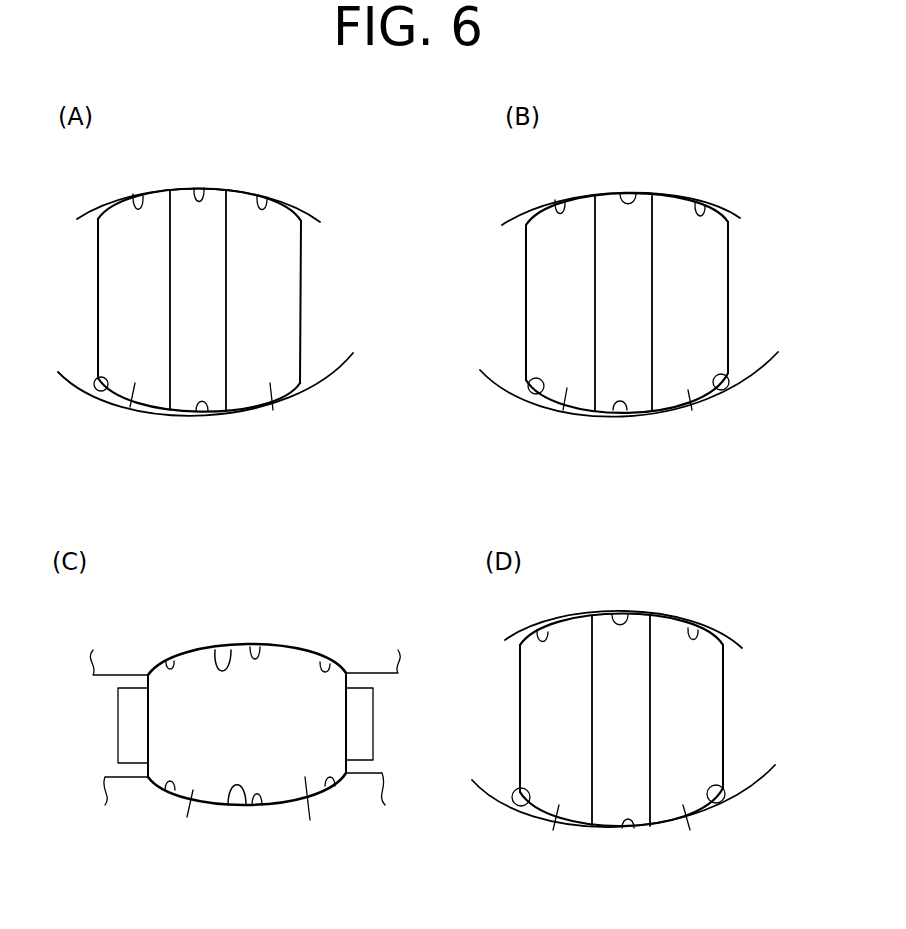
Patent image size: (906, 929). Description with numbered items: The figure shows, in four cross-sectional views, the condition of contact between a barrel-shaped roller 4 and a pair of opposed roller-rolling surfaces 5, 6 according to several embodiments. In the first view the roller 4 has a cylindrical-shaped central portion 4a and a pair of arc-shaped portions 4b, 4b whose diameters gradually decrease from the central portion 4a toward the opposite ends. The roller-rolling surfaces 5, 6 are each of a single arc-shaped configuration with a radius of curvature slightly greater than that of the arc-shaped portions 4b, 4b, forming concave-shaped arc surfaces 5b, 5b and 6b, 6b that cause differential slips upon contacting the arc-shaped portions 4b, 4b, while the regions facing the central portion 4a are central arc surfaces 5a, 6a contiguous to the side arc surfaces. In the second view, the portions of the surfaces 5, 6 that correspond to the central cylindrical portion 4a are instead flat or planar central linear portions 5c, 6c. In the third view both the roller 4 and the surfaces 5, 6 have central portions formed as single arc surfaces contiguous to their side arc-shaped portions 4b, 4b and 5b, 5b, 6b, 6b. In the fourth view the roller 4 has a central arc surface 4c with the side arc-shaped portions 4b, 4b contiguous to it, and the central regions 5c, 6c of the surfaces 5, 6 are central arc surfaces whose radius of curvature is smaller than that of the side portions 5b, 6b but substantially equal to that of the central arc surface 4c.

The roller 4 is at (96, 251).
The central cylindrical portion 4a is at (188, 403).
The arc-shaped portions 4b is at (130, 407).
The central arc surface 4c is at (610, 810).
The roller-rolling surface 5 is at (320, 222).
The central arc surface 5a is at (198, 188).
The concave-shaped arc surfaces 5b is at (135, 196).
The central linear portion 5c is at (636, 195).
The roller-rolling surface 6 is at (352, 355).
The central arc surface 6a is at (257, 806).
The concave-shaped arc surfaces 6b is at (85, 388).
The central linear portion 6c is at (205, 412).